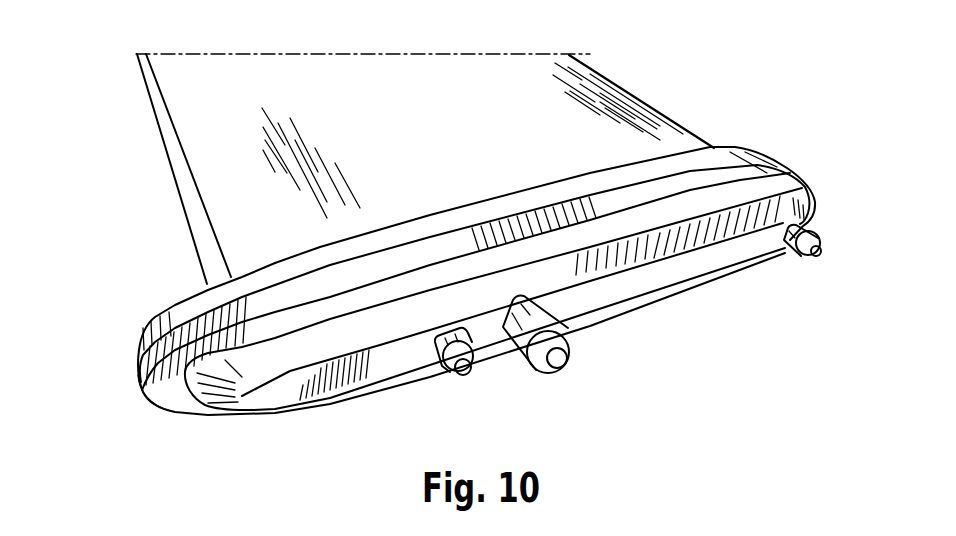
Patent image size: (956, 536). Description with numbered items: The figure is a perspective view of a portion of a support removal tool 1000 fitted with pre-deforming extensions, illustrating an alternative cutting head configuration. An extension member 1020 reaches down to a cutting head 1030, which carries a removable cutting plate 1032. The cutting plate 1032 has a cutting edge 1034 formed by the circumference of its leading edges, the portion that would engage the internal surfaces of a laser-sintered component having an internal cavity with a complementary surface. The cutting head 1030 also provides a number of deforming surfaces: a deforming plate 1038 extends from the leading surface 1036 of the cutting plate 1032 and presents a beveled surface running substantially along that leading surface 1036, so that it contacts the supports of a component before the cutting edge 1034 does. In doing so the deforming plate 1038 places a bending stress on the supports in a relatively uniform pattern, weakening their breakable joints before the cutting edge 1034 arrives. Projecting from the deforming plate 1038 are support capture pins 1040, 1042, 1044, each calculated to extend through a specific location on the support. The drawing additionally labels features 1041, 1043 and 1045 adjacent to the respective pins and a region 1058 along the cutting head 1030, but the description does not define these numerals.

The support removal tool 1000 is at (698, 84).
The extension member 1020 is at (200, 187).
The cutting head 1030 is at (155, 322).
The removable cutting plate 1032 is at (146, 357).
The cutting edge 1034 is at (137, 396).
The leading surface 1036 is at (183, 405).
The deforming plate 1038 is at (347, 372).
The support capture pin 1040 is at (447, 372).
The first button cap 1041 is at (465, 372).
The support capture pin 1042 is at (573, 340).
The second button cap 1043 is at (556, 360).
The support capture pin 1044 is at (786, 258).
The third button cap 1045 is at (814, 256).
The hatched strip 1058 is at (597, 272).